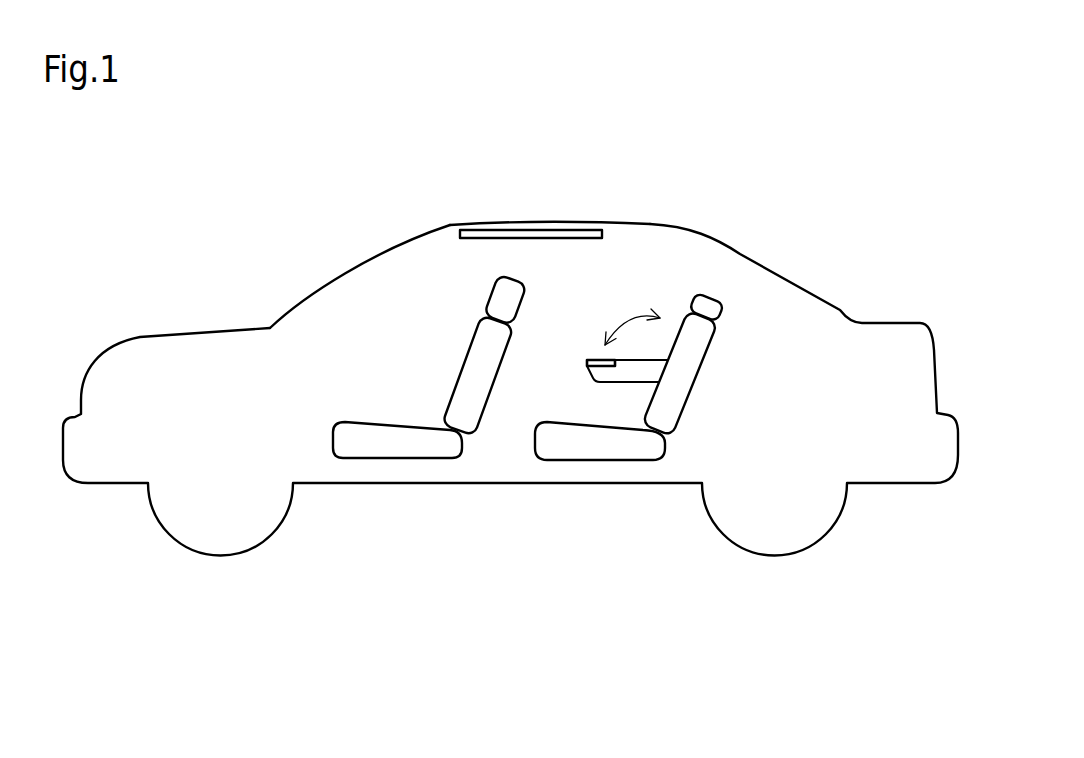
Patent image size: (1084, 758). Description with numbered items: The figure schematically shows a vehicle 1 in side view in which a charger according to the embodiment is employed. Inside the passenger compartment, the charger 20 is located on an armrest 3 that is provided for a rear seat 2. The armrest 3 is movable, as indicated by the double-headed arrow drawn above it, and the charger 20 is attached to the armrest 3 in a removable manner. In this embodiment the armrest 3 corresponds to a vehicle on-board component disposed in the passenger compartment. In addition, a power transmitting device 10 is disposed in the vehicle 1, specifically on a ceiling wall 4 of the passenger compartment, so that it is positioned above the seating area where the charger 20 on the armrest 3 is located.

The vehicle 1 is at (732, 249).
The rear seat 2 is at (703, 357).
The armrest 3 is at (622, 383).
The ceiling wall 4 is at (632, 229).
The power transmitting device 10 is at (573, 238).
The charger 20 is at (593, 357).